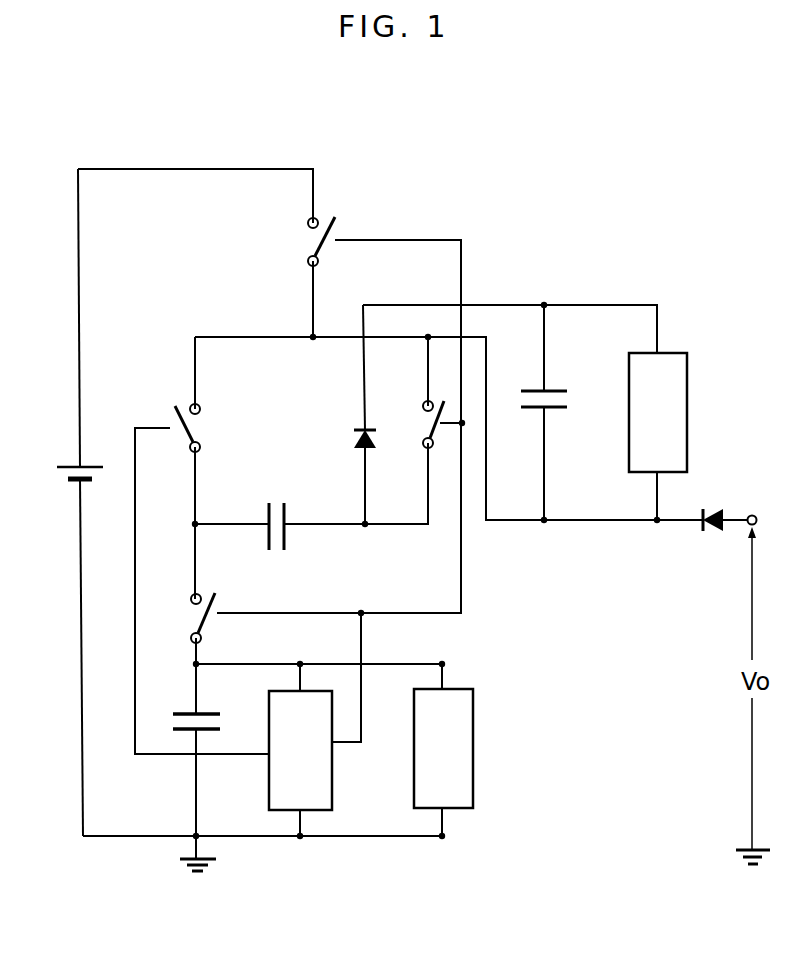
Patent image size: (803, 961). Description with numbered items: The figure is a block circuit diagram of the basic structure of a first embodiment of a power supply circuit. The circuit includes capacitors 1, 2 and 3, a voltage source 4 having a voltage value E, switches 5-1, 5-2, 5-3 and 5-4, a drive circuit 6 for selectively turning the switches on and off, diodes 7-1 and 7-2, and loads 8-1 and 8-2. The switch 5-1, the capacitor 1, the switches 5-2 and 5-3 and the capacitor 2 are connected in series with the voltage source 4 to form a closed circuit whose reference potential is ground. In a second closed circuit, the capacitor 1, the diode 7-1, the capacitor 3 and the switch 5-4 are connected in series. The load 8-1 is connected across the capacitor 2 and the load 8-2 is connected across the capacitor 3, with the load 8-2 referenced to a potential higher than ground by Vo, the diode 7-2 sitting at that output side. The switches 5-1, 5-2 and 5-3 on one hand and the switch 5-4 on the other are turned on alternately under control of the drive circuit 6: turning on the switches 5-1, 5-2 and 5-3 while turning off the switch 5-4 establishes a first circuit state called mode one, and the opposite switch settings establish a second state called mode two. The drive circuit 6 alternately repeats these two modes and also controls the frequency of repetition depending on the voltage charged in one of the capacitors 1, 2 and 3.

The capacitor 1 is at (276, 500).
The capacitor 2 is at (222, 724).
The capacitor 3 is at (570, 399).
The voltage source 4 is at (63, 470).
The switch 5-1 is at (308, 241).
The switch 5-2 is at (422, 432).
The switch 5-3 is at (218, 603).
The switch 5-4 is at (199, 431).
The drive circuit 6 is at (334, 782).
The diode 7-1 is at (352, 438).
The diode 7-2 is at (706, 509).
The load 8-1 is at (474, 756).
The load 8-2 is at (688, 389).